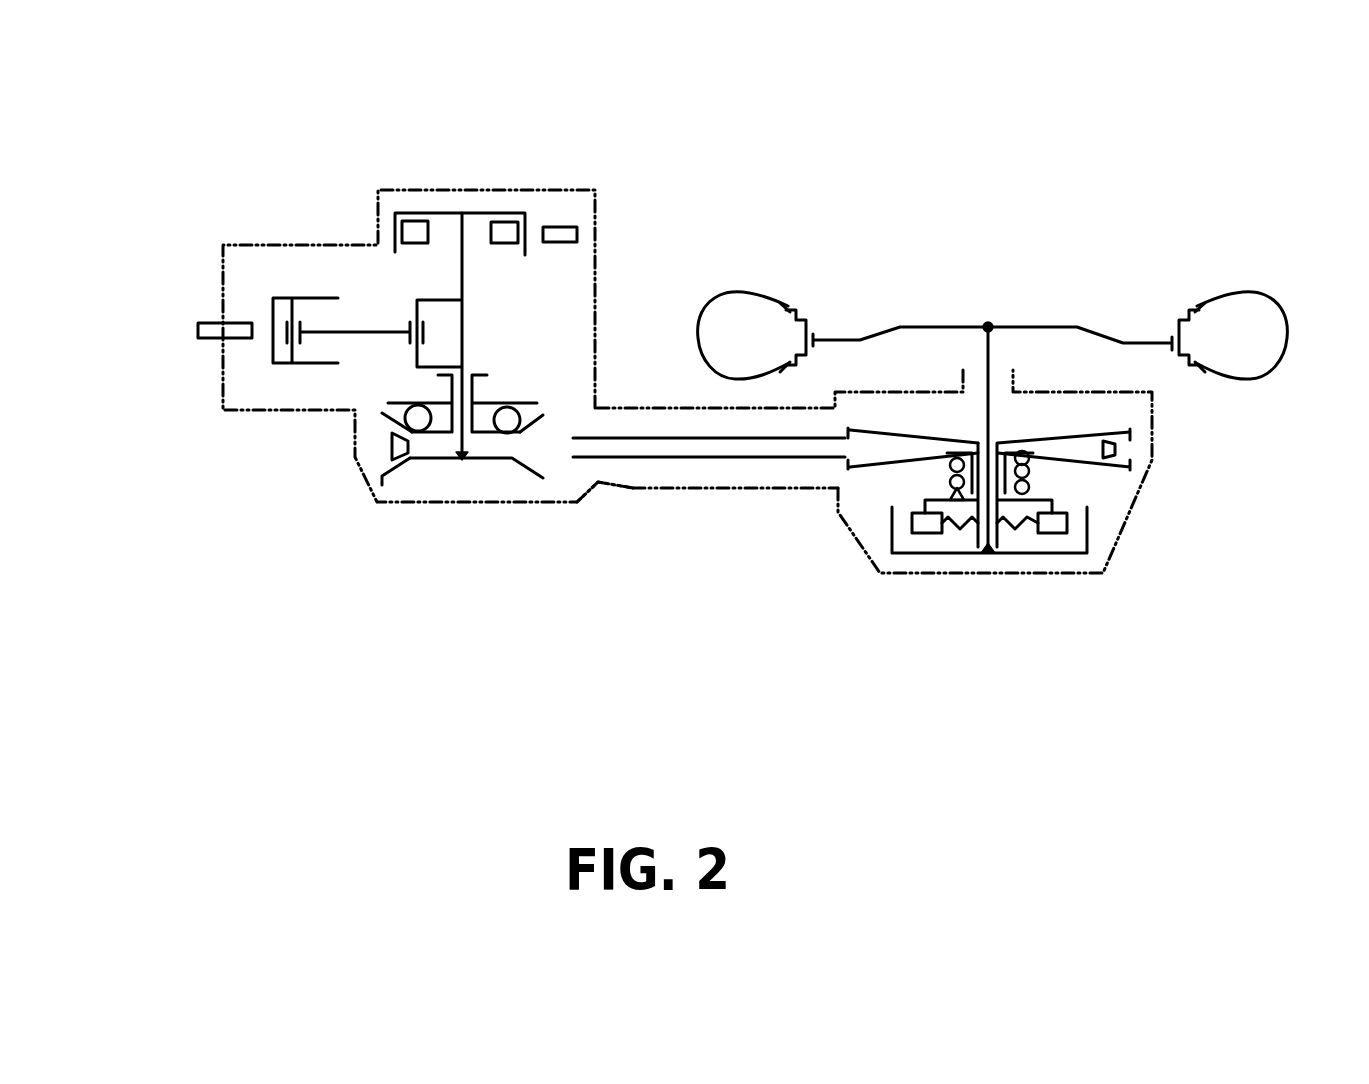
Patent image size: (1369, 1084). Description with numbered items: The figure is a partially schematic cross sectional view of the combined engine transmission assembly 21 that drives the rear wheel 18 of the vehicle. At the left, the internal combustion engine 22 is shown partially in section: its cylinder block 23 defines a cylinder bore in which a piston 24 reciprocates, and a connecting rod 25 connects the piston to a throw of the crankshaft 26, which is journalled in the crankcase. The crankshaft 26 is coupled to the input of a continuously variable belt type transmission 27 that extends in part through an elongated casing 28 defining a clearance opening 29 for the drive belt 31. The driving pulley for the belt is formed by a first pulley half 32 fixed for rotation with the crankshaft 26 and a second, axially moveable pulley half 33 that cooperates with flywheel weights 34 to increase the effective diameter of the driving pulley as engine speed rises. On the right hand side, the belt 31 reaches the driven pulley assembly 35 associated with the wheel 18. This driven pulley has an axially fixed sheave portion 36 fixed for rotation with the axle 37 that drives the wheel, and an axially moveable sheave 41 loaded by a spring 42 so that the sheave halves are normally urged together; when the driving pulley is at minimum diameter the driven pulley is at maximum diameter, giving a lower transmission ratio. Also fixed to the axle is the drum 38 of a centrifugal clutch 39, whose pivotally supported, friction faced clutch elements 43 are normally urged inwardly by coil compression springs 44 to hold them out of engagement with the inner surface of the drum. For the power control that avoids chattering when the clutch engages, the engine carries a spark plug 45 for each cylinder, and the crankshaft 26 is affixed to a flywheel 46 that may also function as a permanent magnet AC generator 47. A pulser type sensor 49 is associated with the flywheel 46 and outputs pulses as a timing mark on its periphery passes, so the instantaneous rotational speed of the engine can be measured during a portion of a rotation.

The driven rear wheel 18 is at (1262, 293).
The engine transmission assembly 21 is at (707, 535).
The internal combustion engine 22 is at (561, 226).
The cylinder block 23 is at (258, 244).
The piston 24 is at (312, 298).
The connecting rod 25 is at (343, 330).
The crankshaft 26 is at (464, 282).
The continuously variable belt type transmission 27 is at (446, 480).
The elongated casing 28 is at (655, 490).
The clearance opening 29 is at (744, 473).
The drive belt 31 is at (390, 445).
The first pulley half 32 is at (388, 473).
The second axially moveable pulley half 33 is at (388, 413).
The flywheel weights 34 is at (417, 407).
The driven pulley assembly 35 is at (1120, 414).
The axially fixed sheave portion 36 is at (1125, 433).
The axle 37 is at (988, 350).
The drum 38 is at (1090, 547).
The centrifugal clutch 39 is at (1105, 529).
The axially moveable sheave 41 is at (1118, 462).
The spring 42 is at (947, 479).
The clutch elements 43 is at (1057, 512).
The coil compression springs 44 is at (1021, 532).
The spark plug 45 is at (200, 323).
The flywheel 46 is at (397, 227).
The permanent magnet AC generator 47 is at (435, 206).
The pulser type sensor 49 is at (504, 246).